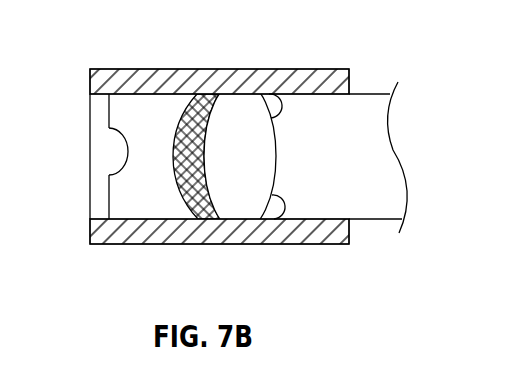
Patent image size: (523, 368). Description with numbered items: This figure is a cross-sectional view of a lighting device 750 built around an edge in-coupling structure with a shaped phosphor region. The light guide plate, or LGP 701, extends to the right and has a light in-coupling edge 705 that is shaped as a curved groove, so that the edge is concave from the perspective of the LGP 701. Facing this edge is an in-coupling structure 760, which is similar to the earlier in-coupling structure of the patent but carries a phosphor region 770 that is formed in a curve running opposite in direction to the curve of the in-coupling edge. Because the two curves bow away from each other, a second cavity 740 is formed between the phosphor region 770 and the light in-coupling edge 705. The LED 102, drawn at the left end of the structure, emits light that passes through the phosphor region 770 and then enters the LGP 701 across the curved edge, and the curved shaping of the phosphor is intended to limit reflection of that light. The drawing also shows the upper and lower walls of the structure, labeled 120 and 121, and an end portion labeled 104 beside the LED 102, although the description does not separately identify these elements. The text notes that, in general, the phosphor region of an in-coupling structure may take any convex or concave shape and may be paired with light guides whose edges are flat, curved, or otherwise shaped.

The lighting device 750 is at (241, 152).
The upper housing wall 120 is at (173, 72).
The lower housing wall 121 is at (105, 236).
The in-coupling structure 760 is at (193, 155).
The second cavity 740 is at (269, 94).
The light in-coupling edge 705 is at (276, 219).
The phosphor region 770 is at (202, 200).
The light guide plate (LGP) 701 is at (377, 160).
The end wall 104 is at (100, 143).
The LED 102 is at (127, 155).